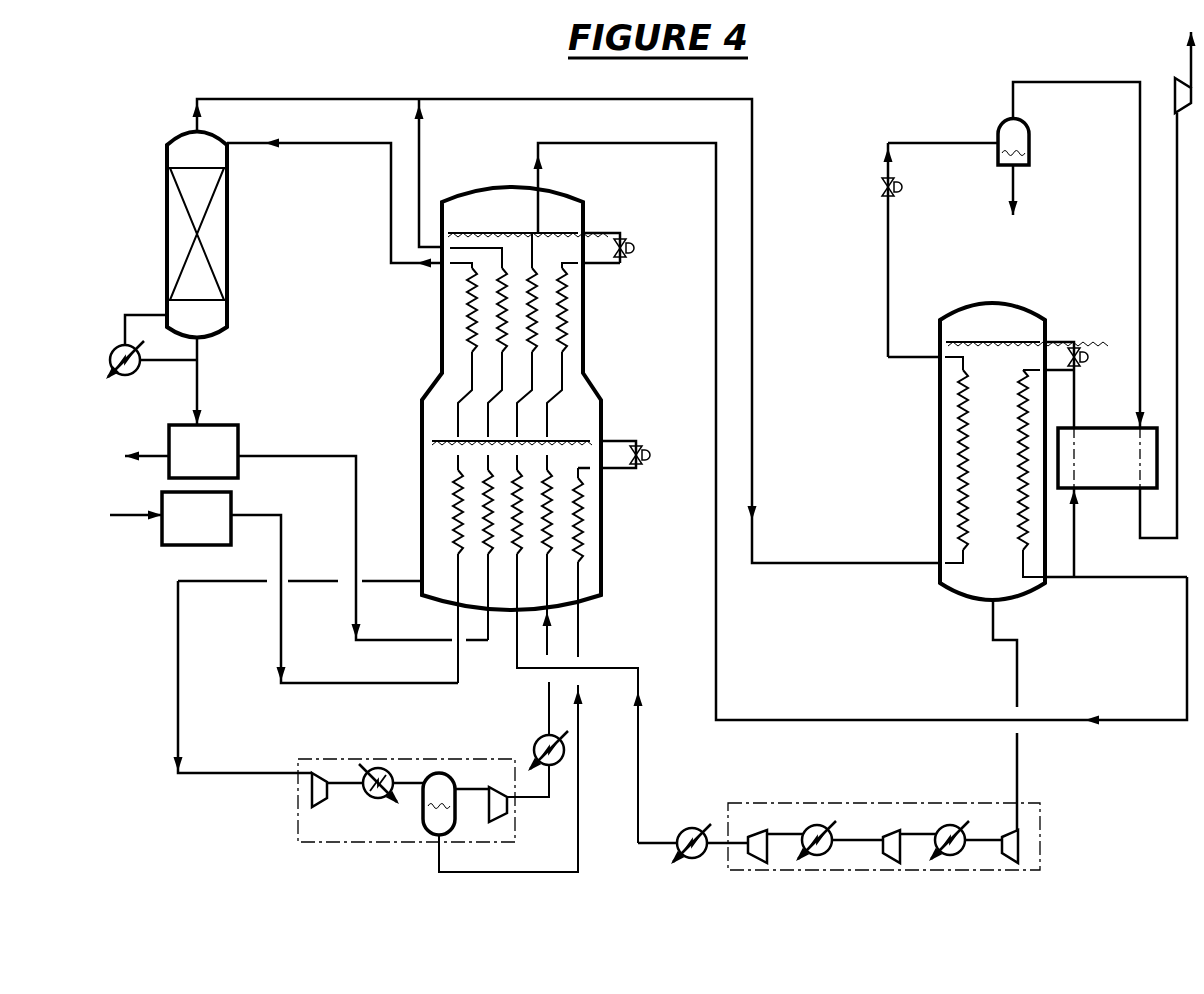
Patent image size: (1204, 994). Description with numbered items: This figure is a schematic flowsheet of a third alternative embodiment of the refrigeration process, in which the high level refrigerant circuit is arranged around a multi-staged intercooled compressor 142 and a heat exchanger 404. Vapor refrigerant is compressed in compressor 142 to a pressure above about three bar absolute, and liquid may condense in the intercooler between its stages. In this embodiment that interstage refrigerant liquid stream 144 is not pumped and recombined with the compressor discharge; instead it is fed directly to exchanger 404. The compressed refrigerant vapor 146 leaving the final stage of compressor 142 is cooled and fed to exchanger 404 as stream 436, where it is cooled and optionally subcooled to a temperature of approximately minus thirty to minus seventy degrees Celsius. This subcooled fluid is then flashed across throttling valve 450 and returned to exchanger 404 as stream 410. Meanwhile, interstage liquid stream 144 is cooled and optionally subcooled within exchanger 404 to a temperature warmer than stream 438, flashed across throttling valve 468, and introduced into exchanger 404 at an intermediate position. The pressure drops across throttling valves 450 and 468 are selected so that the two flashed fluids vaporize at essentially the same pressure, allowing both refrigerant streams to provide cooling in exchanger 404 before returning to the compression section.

The exchanger 404 is at (418, 400).
The stream 410 is at (598, 224).
The stream 438 is at (597, 274).
The throttling valve 450 is at (631, 249).
The throttling valve 468 is at (645, 455).
The stream 436 is at (549, 720).
The multi-staged intercooled compressor 142 is at (298, 842).
The interstage refrigerant liquid stream 144 is at (436, 862).
The compressed refrigerant vapor 146 is at (514, 808).